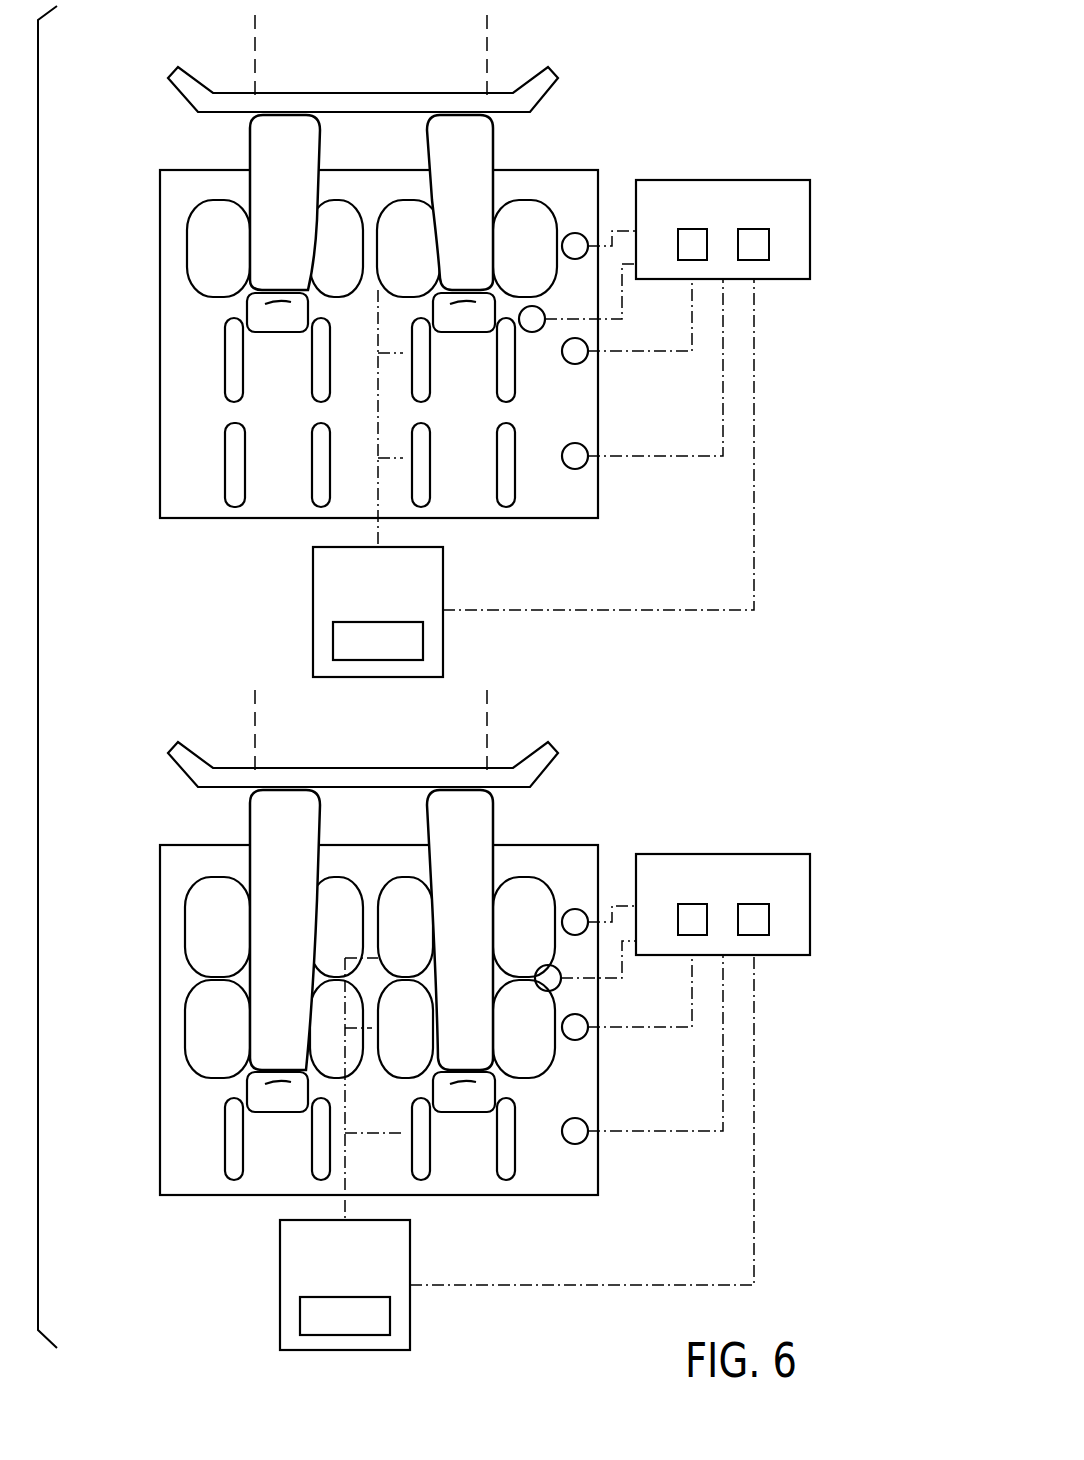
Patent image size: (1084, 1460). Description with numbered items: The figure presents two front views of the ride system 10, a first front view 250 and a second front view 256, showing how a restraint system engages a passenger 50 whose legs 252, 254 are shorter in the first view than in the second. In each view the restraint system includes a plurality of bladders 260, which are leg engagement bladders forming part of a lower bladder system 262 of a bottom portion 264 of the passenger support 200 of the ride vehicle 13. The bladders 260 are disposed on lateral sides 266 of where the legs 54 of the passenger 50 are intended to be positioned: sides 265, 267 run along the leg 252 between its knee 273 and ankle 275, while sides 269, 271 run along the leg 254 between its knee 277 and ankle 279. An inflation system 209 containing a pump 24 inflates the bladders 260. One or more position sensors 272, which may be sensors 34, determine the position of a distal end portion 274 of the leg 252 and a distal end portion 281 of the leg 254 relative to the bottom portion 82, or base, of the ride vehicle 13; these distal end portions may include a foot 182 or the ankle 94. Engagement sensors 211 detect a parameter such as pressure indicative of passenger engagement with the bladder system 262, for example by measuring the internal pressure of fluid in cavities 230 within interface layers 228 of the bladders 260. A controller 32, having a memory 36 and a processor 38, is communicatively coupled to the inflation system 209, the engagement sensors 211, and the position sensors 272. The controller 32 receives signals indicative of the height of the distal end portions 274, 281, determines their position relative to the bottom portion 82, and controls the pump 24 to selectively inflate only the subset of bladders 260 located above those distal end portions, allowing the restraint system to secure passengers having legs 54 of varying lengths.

The ride system 10 is at (116, 43).
The ride vehicle 13 is at (127, 85).
The first front view 250 is at (128, 122).
The second front view 256 is at (127, 797).
The seat assembly 200 is at (130, 158).
The passenger 50 is at (472, 72).
The plurality of bladders 260 is at (515, 163).
The lower bladder system 262 is at (162, 582).
The interface layer 228 is at (168, 248).
The cavity 230 is at (220, 247).
The side 265 is at (216, 195).
The bottom portion 264 is at (180, 364).
The sides 266 is at (207, 418).
The leg 252 is at (281, 552).
The leg 254 is at (431, 551).
The knee 273 is at (283, 122).
The knee 277 is at (455, 127).
The legs 54 is at (234, 195).
The ankle 94 is at (272, 275).
The side 267 is at (323, 315).
The foot 182 is at (293, 333).
The ankle 275 is at (273, 330).
The ankle 279 is at (460, 330).
The distal end portion 274 is at (260, 340).
The distal end portion 281 is at (445, 340).
The side 269 is at (367, 422).
The side 271 is at (525, 390).
The position sensor 272 is at (568, 485).
The sensor 34 is at (583, 236).
The engagement sensor 211 is at (545, 304).
The controller 32 is at (748, 570).
The memory 36 is at (771, 240).
The processor 38 is at (692, 262).
The bottom portion 82 is at (302, 948).
The inflation system 209 is at (302, 948).
The pump 24 is at (333, 638).